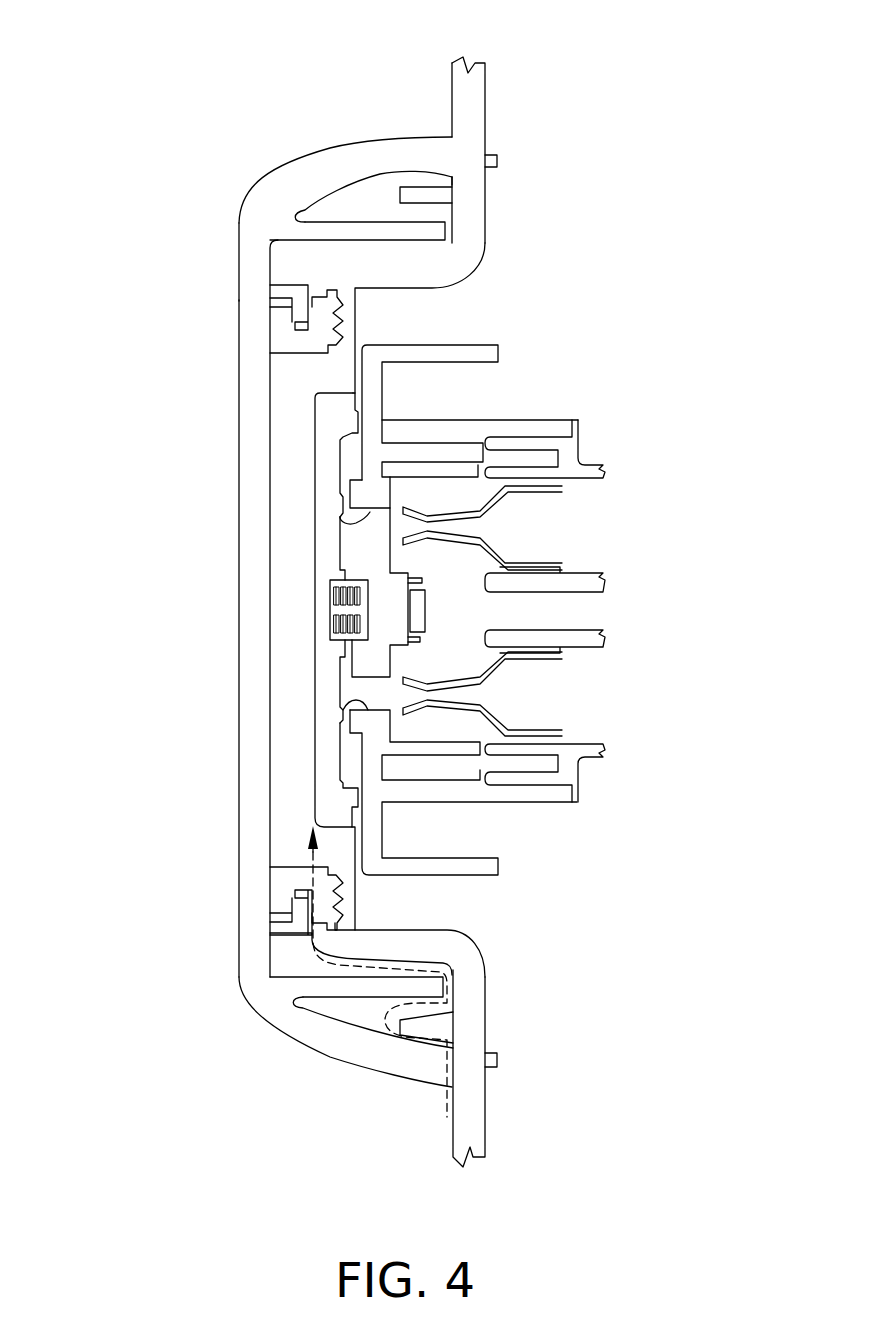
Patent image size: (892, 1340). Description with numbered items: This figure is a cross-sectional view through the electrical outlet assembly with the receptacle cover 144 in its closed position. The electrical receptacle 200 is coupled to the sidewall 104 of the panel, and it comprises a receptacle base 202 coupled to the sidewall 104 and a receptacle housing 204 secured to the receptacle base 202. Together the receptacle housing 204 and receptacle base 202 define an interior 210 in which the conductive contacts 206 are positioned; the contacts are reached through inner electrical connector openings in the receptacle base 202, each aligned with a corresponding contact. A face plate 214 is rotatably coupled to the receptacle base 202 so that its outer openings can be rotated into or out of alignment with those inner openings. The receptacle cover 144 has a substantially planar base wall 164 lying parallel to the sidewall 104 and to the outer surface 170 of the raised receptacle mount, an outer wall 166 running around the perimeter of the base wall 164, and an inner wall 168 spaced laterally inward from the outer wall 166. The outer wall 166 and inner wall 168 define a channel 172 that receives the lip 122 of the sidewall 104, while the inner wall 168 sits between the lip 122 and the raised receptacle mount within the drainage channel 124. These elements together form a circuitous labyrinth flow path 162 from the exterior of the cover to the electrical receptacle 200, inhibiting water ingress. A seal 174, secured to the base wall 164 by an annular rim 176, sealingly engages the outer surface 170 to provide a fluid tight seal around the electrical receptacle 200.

The sidewall 104 is at (452, 88).
The lip 122 is at (407, 1026).
The drainage channel 124 is at (397, 253).
The receptacle cover 144 is at (252, 173).
The labyrinth flow path 162 is at (314, 946).
The base wall 164 is at (238, 658).
The outer wall 166 is at (355, 153).
The inner wall 168 is at (305, 233).
The outer surface 170 is at (320, 375).
The channel 172 is at (375, 207).
The seal 174 is at (285, 341).
The annular rim 176 is at (285, 920).
The electrical receptacle 200 is at (562, 289).
The receptacle base 202 is at (490, 878).
The receptacle housing 204 is at (580, 758).
The conductive contacts 206 is at (553, 665).
The interior 210 is at (447, 628).
The face plate 214 is at (314, 546).